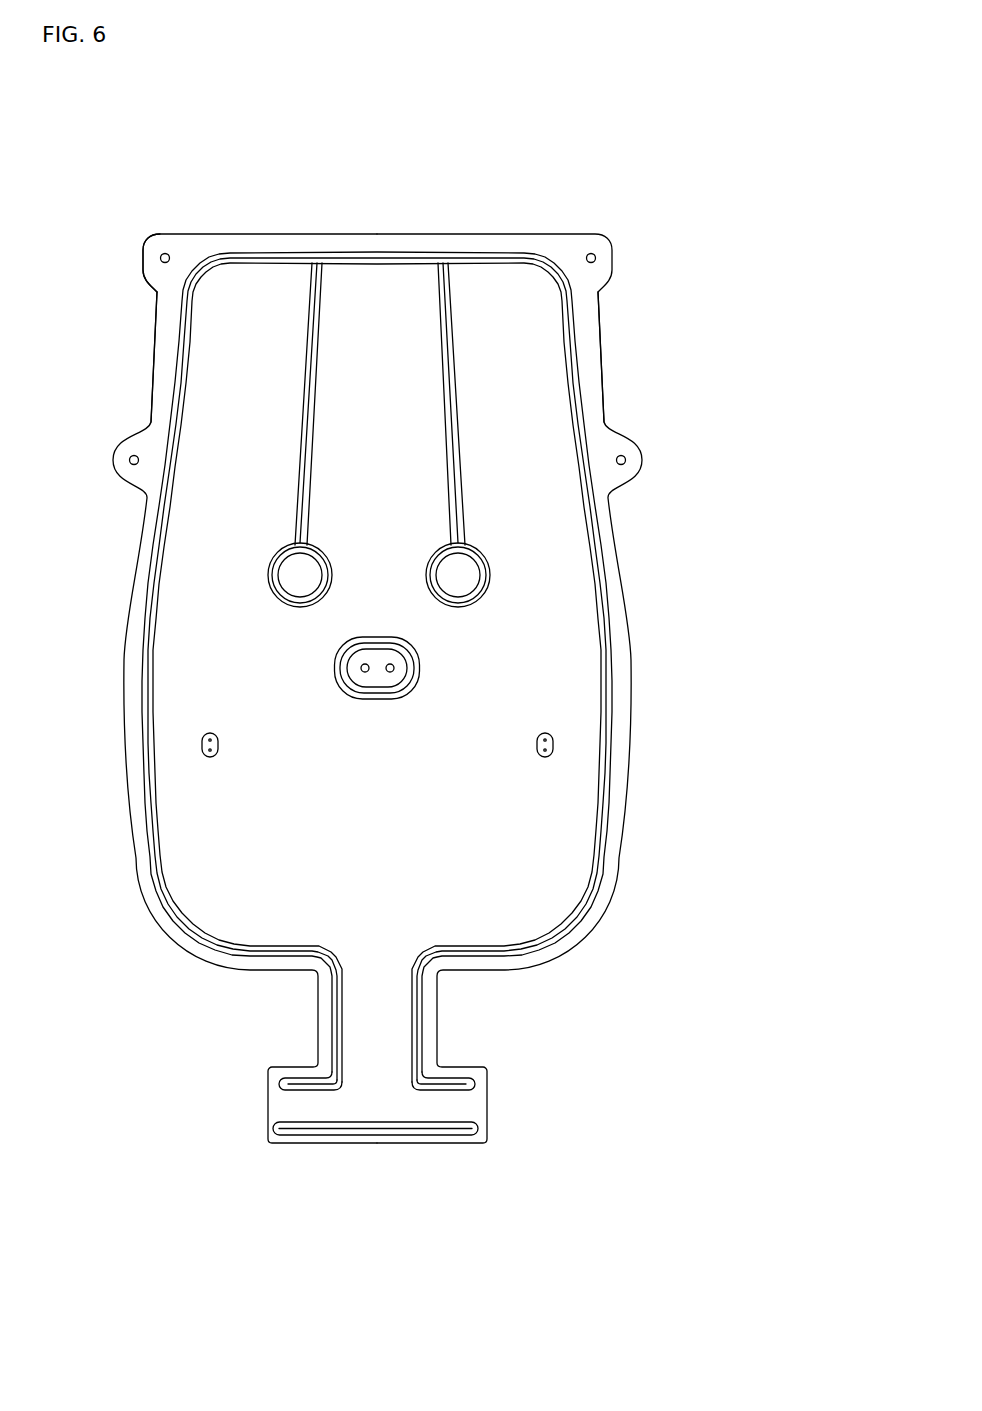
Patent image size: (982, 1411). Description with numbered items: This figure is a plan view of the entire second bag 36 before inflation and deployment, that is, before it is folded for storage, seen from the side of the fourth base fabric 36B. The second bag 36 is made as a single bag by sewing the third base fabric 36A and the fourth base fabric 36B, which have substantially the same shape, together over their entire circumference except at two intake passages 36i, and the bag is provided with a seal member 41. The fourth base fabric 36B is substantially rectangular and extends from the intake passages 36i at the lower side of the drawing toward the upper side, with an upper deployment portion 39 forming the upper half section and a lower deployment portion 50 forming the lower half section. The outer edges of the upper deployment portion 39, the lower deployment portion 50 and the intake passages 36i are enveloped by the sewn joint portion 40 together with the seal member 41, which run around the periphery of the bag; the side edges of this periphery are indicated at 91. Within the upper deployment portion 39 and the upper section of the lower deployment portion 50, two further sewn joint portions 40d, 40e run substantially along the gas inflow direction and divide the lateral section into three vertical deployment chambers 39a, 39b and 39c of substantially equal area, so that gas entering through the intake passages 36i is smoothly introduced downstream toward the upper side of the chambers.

The second bag 36 is at (697, 178).
The fourth base fabric 36B is at (147, 235).
The third base fabric 36A is at (98, 252).
The upper deployment portion 39 is at (765, 233).
The vertical deployment chamber 39a is at (266, 305).
The vertical deployment chamber 39b is at (372, 318).
The vertical deployment chamber 39c is at (505, 323).
The sewn joint portion 40 is at (143, 648).
The seal member 41 is at (143, 745).
The sewn joint portion 40d is at (303, 447).
The sewn joint portion 40e is at (455, 470).
The lower deployment portion 50 is at (765, 502).
The side edge 91 is at (153, 371).
The intake passage 36i is at (290, 1103).